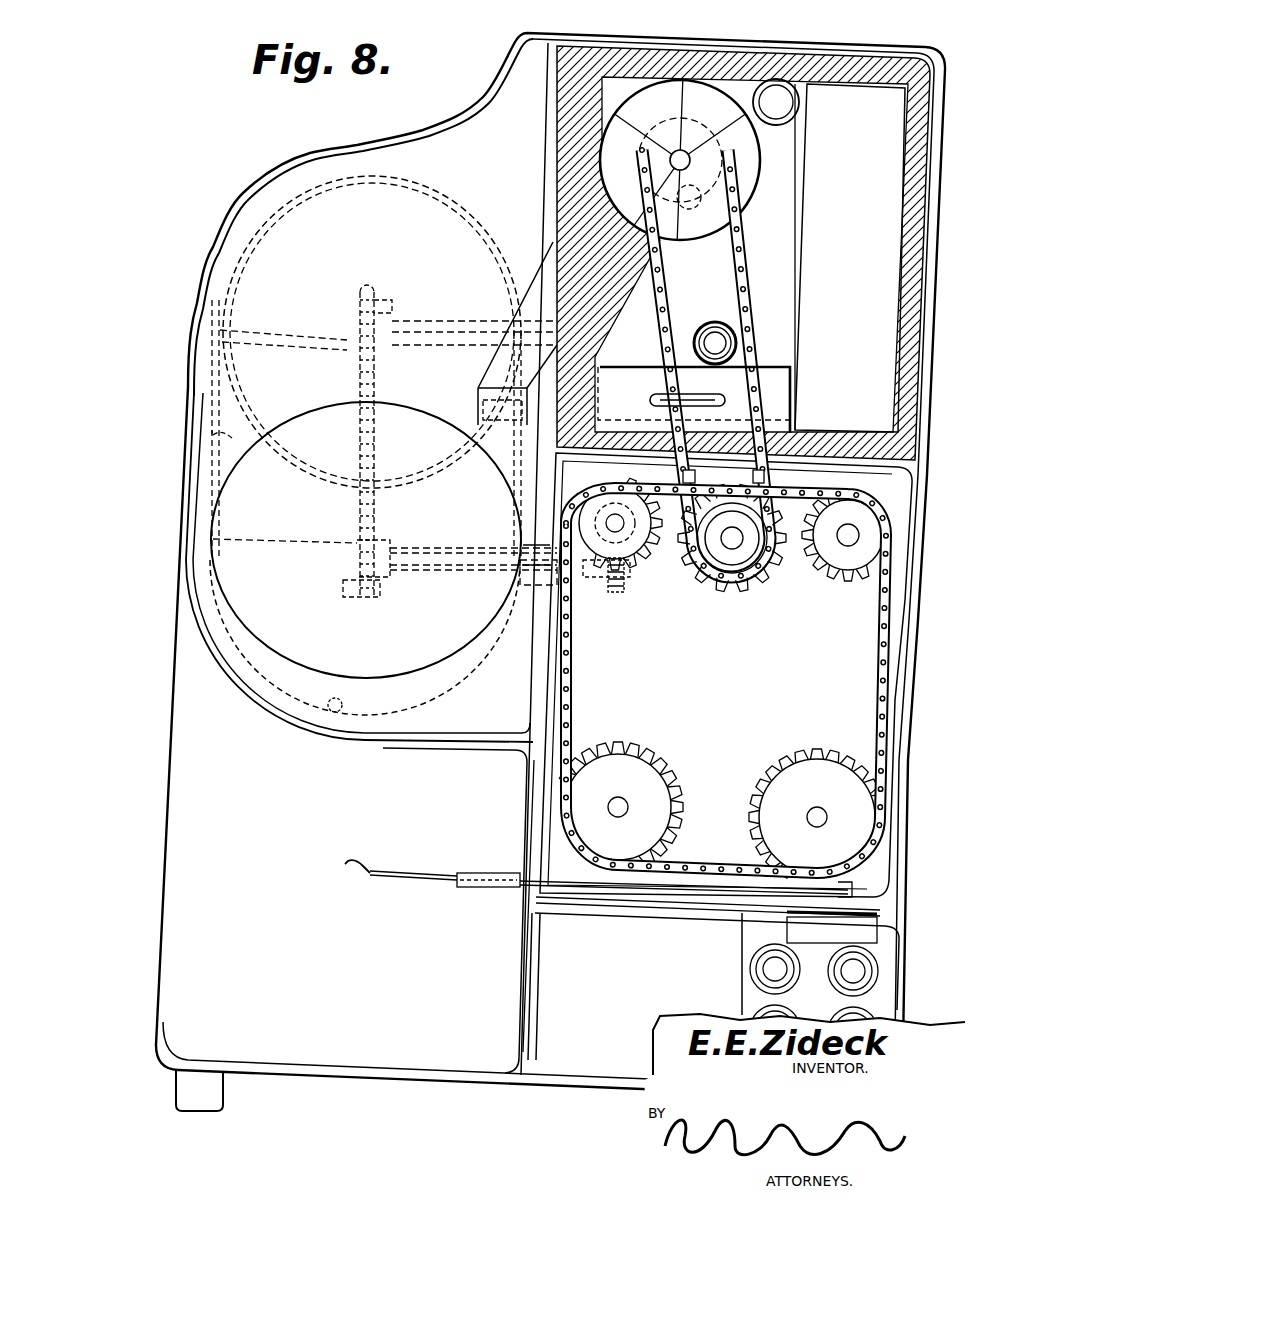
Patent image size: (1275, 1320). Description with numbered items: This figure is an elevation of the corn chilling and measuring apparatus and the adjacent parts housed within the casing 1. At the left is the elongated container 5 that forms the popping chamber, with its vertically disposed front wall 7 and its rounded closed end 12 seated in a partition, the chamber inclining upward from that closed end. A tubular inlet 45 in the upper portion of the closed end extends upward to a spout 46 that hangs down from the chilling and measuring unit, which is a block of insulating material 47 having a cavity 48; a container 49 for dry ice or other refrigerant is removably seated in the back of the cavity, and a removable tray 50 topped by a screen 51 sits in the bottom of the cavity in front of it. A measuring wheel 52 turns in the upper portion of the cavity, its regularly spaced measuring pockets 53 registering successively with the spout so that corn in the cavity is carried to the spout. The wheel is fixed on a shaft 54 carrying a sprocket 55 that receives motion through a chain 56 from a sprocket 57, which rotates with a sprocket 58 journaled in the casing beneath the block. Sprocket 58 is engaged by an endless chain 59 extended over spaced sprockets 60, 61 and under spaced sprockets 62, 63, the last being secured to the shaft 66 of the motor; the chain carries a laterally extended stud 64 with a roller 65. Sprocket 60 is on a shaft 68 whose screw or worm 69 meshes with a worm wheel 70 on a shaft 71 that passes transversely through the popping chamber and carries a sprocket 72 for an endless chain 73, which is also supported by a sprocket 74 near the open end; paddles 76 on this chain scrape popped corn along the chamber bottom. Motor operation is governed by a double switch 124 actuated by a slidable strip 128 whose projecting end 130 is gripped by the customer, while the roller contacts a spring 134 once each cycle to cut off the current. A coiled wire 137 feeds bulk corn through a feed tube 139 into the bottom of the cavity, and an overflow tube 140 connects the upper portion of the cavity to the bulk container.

The casing 1 is at (465, 95).
The elongated container 5 is at (367, 186).
The front wall 7 is at (222, 443).
The rounded closed end 12 is at (366, 540).
The tubular inlet 45 is at (462, 330).
The spout 46 is at (552, 256).
The block of insulating material 47 is at (562, 71).
The cavity 48 is at (770, 135).
The container 49 is at (850, 258).
The removable tray 50 is at (694, 393).
The screen 51 is at (757, 366).
The measuring wheel 52 is at (748, 198).
The measuring pockets 53 is at (691, 160).
The shaft 54 is at (705, 156).
The sprocket 55 is at (692, 204).
The chain 56 is at (745, 291).
The sprocket 57 is at (712, 556).
The sprocket 58 is at (690, 498).
The endless chain 59 is at (801, 491).
The sprocket 60 is at (640, 546).
The sprocket 61 is at (836, 560).
The sprocket 62 is at (660, 774).
The sprocket 63 is at (797, 774).
The laterally extended stud 64 is at (818, 873).
The roller 65 is at (808, 870).
The shaft 66 is at (821, 811).
The shaft 68 is at (612, 512).
The screw or worm 69 is at (626, 510).
The worm wheel 70 is at (615, 596).
The shaft 71 is at (462, 556).
The sprocket 72 is at (385, 545).
The endless chain 73 is at (380, 471).
The sprocket 74 is at (386, 300).
The paddles 76 is at (348, 338).
The double switch 124 is at (814, 972).
The slidable strip 128 is at (433, 888).
The projecting end 130 is at (357, 866).
The spring 134 is at (851, 887).
The coiled wire 137 is at (736, 340).
The feed tube 139 is at (708, 325).
The tube 140 is at (800, 101).